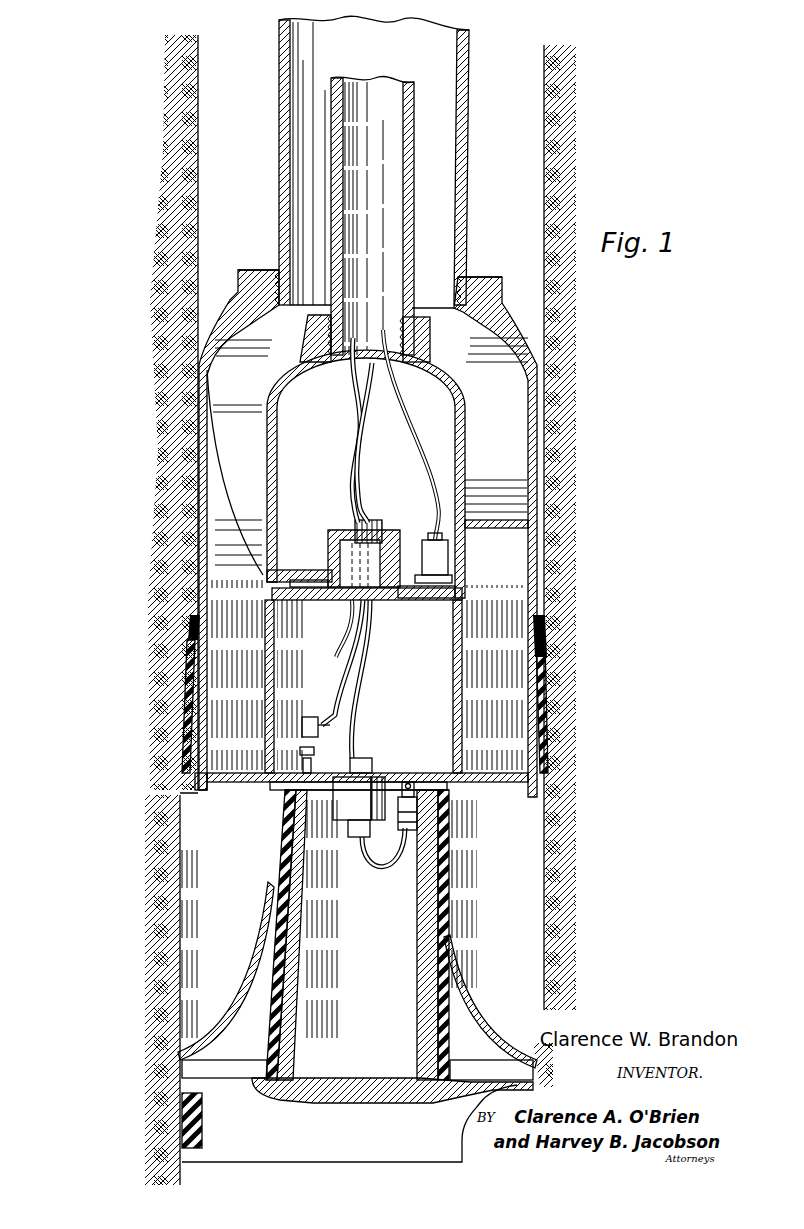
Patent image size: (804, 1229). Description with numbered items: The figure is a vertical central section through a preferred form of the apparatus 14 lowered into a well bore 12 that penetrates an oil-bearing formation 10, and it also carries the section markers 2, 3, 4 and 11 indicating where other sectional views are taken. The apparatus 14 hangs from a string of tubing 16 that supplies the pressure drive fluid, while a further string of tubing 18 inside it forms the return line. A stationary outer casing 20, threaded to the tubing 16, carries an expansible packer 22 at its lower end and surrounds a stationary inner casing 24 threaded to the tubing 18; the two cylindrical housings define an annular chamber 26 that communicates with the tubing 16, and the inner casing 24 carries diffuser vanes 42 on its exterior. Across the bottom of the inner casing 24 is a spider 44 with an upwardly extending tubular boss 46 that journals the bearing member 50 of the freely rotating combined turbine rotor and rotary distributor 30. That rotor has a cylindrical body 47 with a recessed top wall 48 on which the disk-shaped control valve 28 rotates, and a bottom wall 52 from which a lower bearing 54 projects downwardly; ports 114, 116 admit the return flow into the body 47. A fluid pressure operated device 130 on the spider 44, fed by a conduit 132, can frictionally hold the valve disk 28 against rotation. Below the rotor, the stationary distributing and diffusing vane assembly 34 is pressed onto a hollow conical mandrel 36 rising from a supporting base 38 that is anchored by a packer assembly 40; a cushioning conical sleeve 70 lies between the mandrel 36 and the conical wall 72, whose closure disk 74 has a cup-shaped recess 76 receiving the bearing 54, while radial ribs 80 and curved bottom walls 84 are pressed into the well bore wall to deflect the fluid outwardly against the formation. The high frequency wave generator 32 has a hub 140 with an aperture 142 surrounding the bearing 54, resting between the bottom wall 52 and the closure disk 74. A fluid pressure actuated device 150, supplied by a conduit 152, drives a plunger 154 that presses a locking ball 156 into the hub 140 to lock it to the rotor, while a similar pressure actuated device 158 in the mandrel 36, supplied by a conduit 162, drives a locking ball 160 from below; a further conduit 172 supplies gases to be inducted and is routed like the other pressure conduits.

The formation 10 is at (545, 123).
The well bore 12 is at (198, 116).
The apparatus 14 is at (488, 268).
The string of tubing 16 is at (462, 67).
The string of tubing 18 is at (340, 124).
The outer casing 20 is at (531, 407).
The expansible packer 22 is at (543, 732).
The inner casing 24 is at (275, 437).
The annular chamber 26 is at (477, 412).
The control valve 28 is at (447, 588).
The combined turbine rotor and rotary distributor 30 is at (497, 698).
The high frequency wave generator 32 is at (213, 790).
The stationary distributing and diffusing vane assembly 34 is at (518, 850).
The mandrel 36 is at (293, 972).
The supporting base 38 is at (228, 1093).
The packer assembly 40 is at (182, 1107).
The diffuser vanes 42 is at (231, 437).
The spider 44 is at (283, 575).
The tubular boss 46 is at (387, 543).
The cylindrical body 47 is at (455, 645).
The top wall 48 is at (332, 595).
The bearing member 50 is at (348, 552).
The bottom wall 52 is at (283, 773).
The bearing 54 is at (373, 773).
The conical sleeve 70 is at (280, 938).
The conical wall 72 is at (448, 912).
The closure disk 74 is at (423, 790).
The cup-shaped recess 76 is at (327, 810).
The ribs 80 is at (197, 947).
The bottom walls 84 is at (220, 1033).
The ports 114 is at (267, 688).
The ports 116 is at (457, 693).
The fluid pressure operated device 130 is at (420, 553).
The conduit 132 is at (403, 400).
The hub 140 is at (398, 763).
The aperture 142 is at (335, 780).
The fluid pressure actuated device 150 is at (306, 718).
The conduit 152 is at (353, 382).
The plunger 154 is at (307, 772).
The locking ball 156 is at (302, 778).
The pressure actuated device 158 is at (410, 817).
The locking ball 160 is at (410, 787).
The conduit 162 is at (352, 471).
The conduit 172 is at (383, 482).
The section line 2- 2 is at (130, 640).
The section line 3- 3 is at (140, 540).
The section line 4- 4 is at (122, 900).
The section line 11- 11 is at (493, 762).